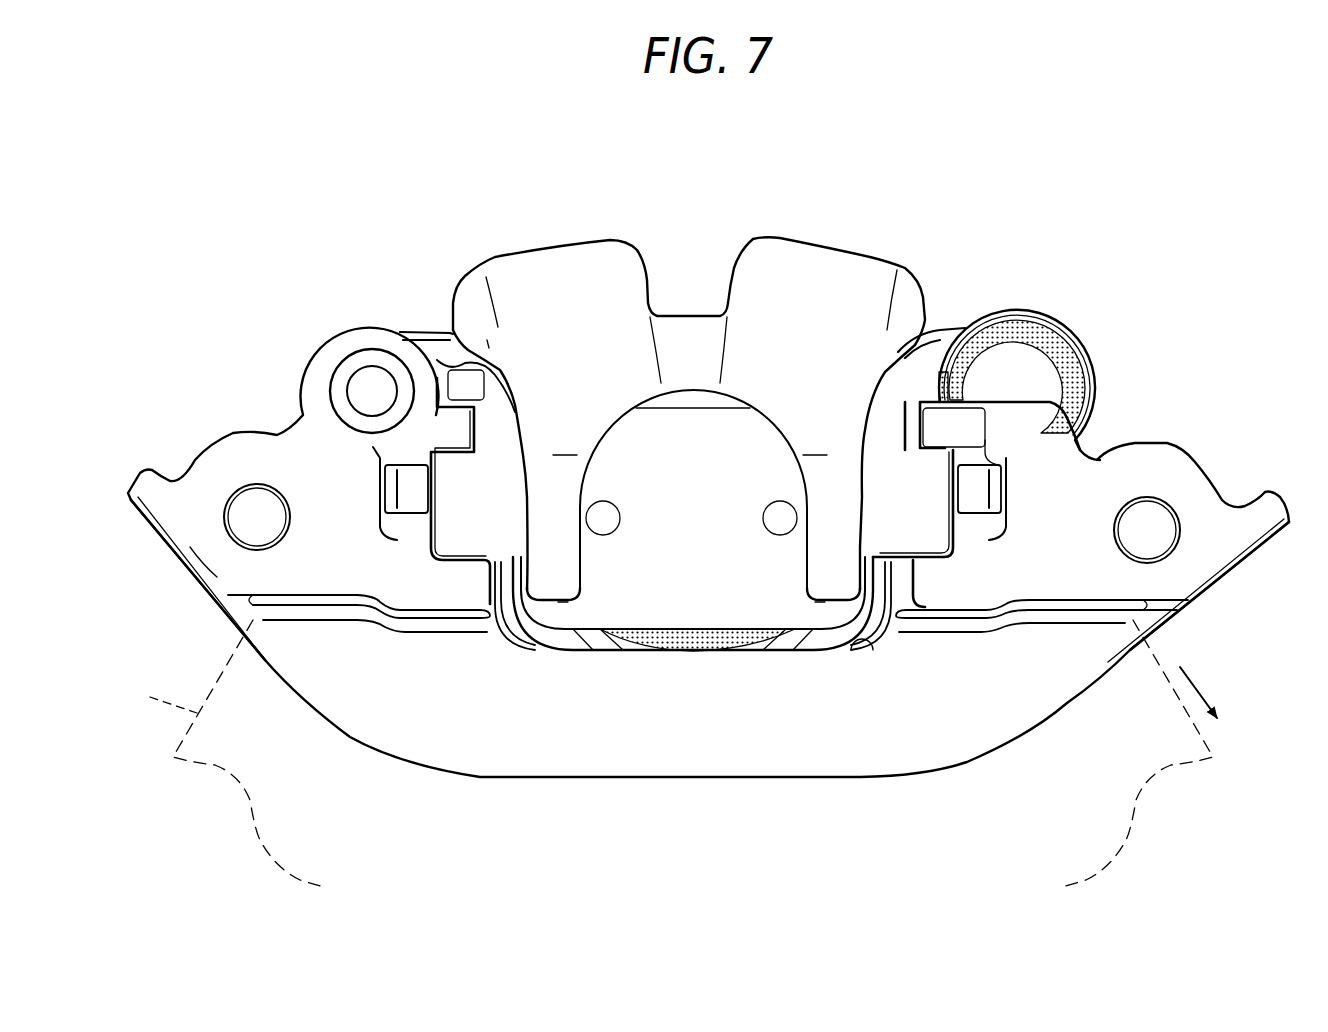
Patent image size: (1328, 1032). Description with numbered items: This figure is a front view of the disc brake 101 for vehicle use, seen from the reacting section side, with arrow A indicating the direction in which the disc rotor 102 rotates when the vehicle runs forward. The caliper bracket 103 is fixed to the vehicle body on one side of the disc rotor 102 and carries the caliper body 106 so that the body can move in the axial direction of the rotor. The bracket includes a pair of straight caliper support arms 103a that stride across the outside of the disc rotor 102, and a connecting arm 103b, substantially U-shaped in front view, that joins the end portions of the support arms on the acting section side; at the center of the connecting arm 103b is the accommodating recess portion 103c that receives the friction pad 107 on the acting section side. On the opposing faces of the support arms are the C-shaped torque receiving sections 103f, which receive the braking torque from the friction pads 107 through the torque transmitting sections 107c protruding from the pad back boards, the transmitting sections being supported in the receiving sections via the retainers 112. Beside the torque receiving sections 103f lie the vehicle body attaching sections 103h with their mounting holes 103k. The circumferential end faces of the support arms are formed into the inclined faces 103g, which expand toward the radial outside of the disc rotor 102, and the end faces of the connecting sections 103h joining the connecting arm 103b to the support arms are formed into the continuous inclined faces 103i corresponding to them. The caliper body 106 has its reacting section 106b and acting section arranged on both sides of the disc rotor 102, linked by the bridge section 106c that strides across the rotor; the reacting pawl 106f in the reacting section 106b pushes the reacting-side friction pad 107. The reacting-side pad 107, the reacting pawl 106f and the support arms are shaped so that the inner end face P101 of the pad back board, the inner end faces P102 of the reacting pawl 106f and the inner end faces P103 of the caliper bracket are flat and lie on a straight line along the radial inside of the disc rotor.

The disc brake 101 is at (962, 178).
The disc rotor 102 is at (150, 697).
The caliper bracket 103 is at (800, 792).
The caliper support arm 103a is at (297, 438).
The connecting arm 103b is at (657, 779).
The accommodating recess portion 103c is at (862, 657).
The torque receiving section 103f is at (442, 565).
The inclined face 103g is at (158, 547).
The connecting section 103h is at (220, 628).
The inclined face 103i is at (251, 660).
The mounting hole 103k is at (268, 532).
The caliper body 106 is at (810, 227).
The reacting section 106b is at (618, 405).
The bridge section 106c is at (596, 252).
The reacting pawl 106f is at (567, 570).
The friction pad 107 is at (650, 613).
The torque transmitting section 107c is at (447, 493).
The retainer 112 is at (497, 612).
The inner end face of the friction pad P101 is at (747, 645).
The inner end face of the reacting pawl P102 is at (561, 602).
The inner end face of the caliper bracket P103 is at (340, 598).
The arrow A is at (1213, 703).